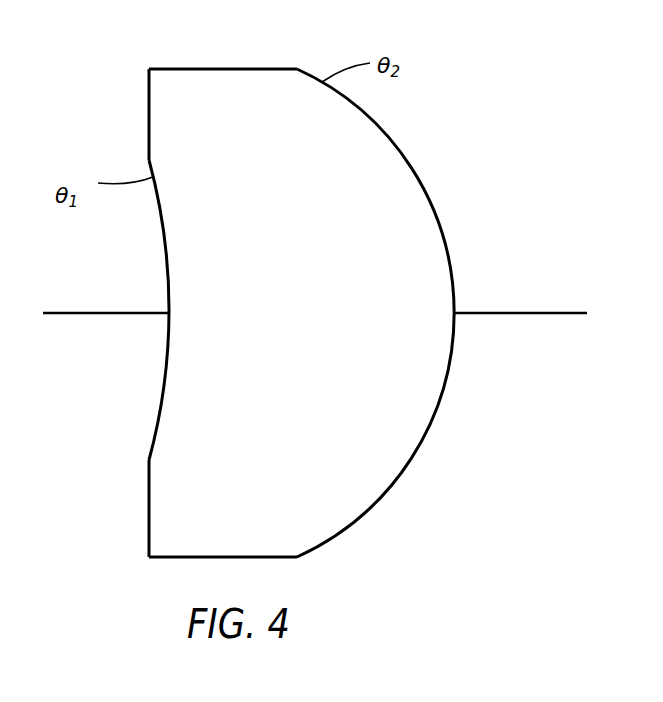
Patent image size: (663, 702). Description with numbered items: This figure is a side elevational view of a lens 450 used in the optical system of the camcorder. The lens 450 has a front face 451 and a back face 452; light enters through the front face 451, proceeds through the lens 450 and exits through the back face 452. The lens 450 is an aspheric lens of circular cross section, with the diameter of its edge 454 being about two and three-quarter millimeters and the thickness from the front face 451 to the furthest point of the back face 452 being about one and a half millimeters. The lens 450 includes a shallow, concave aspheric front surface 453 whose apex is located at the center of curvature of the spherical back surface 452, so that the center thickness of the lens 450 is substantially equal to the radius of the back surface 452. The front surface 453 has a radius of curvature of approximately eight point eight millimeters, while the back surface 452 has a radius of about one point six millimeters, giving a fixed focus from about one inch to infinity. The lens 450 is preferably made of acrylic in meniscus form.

The lens 450 is at (267, 296).
The front face 451 is at (148, 122).
The back face 452 is at (413, 172).
The concave aspheric front surface 453 is at (168, 262).
The edge 454 is at (251, 52).